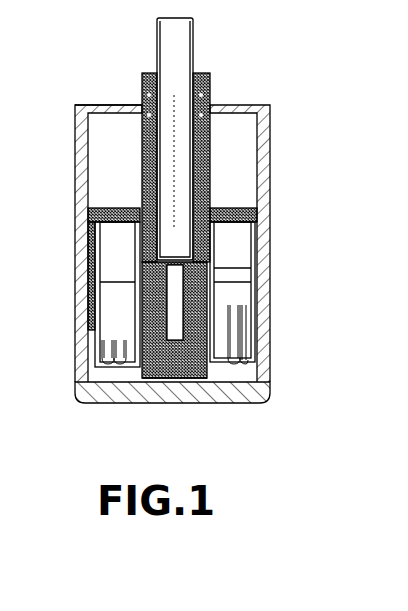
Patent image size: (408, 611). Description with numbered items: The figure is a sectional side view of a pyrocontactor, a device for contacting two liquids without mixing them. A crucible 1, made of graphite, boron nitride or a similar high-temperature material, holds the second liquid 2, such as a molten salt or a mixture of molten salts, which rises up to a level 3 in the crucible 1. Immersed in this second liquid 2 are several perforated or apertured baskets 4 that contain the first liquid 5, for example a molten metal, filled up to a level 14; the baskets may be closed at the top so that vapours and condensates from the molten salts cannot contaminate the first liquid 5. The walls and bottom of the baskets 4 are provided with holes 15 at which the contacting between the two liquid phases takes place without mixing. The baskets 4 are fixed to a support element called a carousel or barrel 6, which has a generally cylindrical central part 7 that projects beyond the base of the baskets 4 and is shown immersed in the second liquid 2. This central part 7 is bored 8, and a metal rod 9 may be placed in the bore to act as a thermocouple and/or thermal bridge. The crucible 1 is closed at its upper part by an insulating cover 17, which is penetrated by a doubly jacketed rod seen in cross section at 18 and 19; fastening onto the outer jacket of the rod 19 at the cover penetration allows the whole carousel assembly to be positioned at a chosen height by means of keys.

The crucible 1 is at (265, 172).
The second liquid 2 is at (262, 360).
The level 3 is at (96, 295).
The perforated basket 4 is at (240, 340).
The first liquid 5 is at (100, 320).
The carousel 6 is at (262, 225).
The central part 7 is at (152, 378).
The bore 8 is at (198, 380).
The metal rod 9 is at (207, 268).
The level 14 is at (120, 208).
The holes 15 is at (115, 367).
The insulating cover 17 is at (118, 105).
The doubly jacketed rod 18 is at (194, 27).
The outer jacket of the rod 19 is at (213, 104).